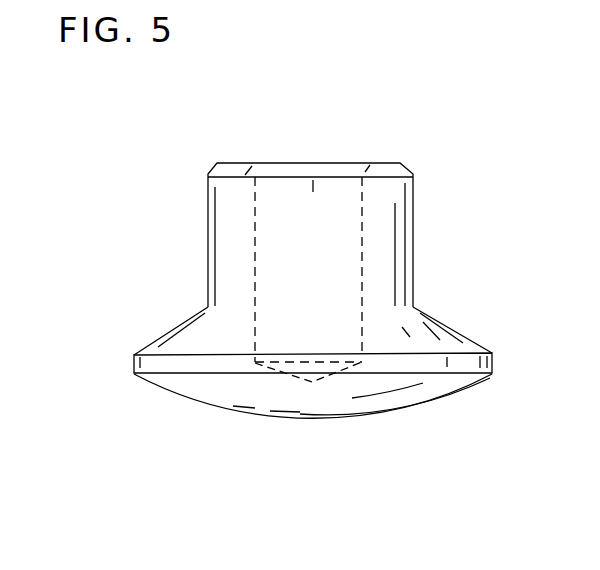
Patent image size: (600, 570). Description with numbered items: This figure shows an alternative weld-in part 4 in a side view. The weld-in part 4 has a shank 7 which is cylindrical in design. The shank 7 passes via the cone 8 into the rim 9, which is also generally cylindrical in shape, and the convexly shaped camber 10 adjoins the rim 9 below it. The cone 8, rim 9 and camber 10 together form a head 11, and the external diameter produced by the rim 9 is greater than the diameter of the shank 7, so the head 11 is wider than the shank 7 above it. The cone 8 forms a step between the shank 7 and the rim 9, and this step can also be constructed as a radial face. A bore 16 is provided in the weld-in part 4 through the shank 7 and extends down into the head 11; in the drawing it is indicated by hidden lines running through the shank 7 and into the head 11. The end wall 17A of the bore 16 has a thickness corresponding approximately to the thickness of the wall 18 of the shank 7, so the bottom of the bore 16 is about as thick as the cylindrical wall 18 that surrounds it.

The weld-in part 4 is at (440, 212).
The shank 7 is at (207, 192).
The cone 8 is at (463, 335).
The rim 9 is at (133, 362).
The camber 10 is at (423, 400).
The head 11 is at (168, 325).
The bore 16 is at (313, 192).
The end wall 17A is at (307, 398).
The wall 18 is at (226, 233).